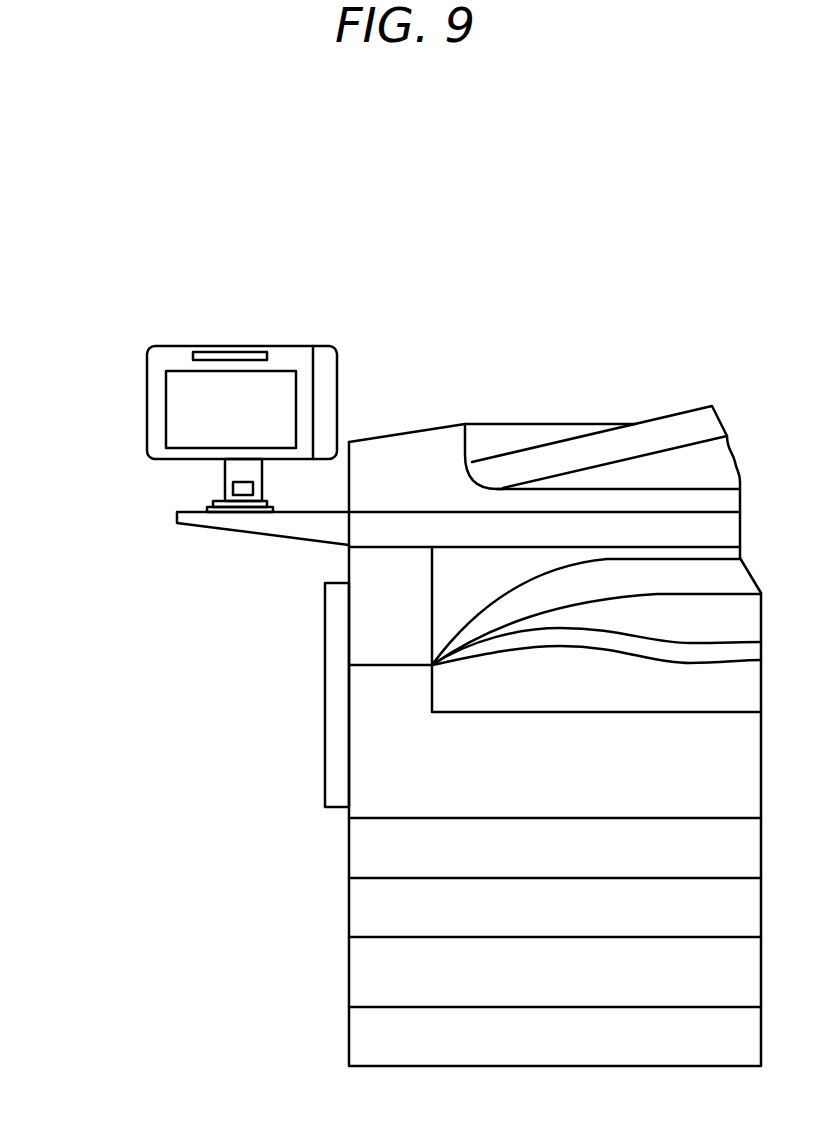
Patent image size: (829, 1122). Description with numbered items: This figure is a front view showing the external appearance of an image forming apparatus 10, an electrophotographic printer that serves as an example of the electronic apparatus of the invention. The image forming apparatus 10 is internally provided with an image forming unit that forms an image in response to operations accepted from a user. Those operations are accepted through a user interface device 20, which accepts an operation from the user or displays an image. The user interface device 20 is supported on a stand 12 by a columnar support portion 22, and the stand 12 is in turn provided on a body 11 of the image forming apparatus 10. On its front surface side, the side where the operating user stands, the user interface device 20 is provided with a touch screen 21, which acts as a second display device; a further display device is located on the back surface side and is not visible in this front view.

The image forming apparatus 10 is at (503, 686).
The body 11 is at (349, 913).
The stand 12 is at (220, 530).
The user interface device 20 is at (197, 444).
The touch screen 21 is at (193, 436).
The columnar support portion 22 is at (253, 476).